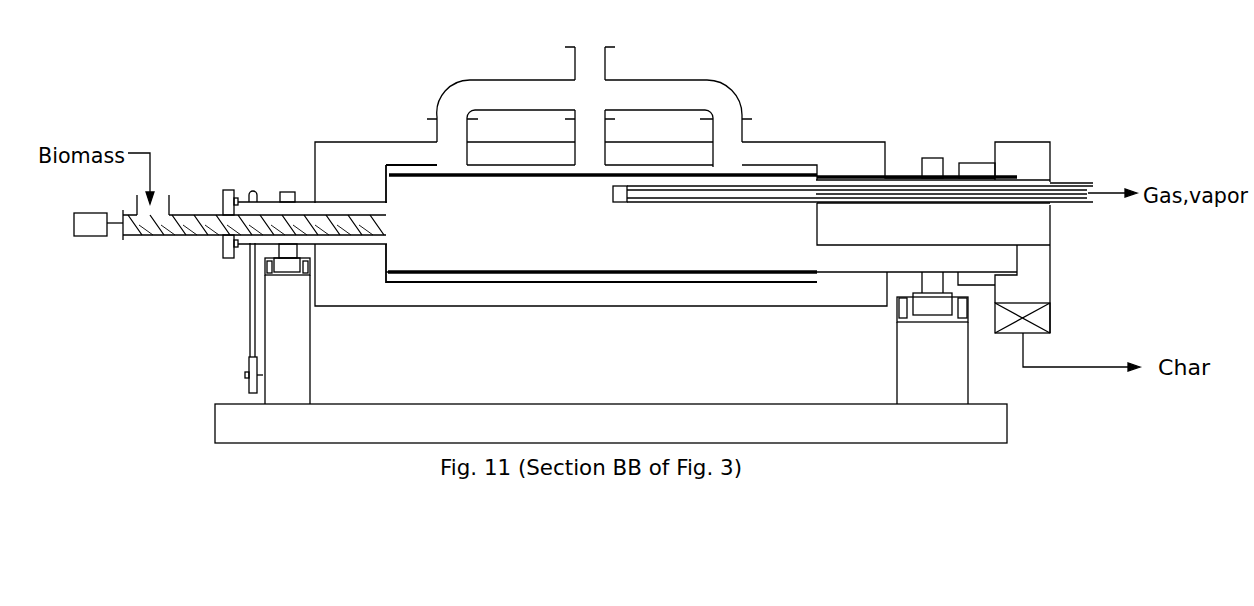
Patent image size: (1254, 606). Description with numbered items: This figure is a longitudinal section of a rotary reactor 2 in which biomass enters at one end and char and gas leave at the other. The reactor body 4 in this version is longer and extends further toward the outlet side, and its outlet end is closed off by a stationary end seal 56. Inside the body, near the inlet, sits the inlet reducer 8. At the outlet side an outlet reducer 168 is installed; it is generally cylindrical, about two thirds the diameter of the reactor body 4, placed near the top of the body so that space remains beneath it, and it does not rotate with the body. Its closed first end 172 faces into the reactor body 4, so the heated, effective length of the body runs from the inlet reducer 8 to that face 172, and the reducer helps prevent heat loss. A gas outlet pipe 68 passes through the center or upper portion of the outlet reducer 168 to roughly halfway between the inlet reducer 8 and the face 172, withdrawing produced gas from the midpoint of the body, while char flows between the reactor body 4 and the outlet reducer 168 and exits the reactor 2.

The reactor 2 is at (379, 117).
The reactor body 4 is at (490, 177).
The inlet reducer 8 is at (389, 182).
The stationary end seal 56 is at (1028, 142).
The gas outlet pipe 68 is at (682, 192).
The outlet reducer 168 is at (860, 228).
The closed first end 172 is at (817, 217).